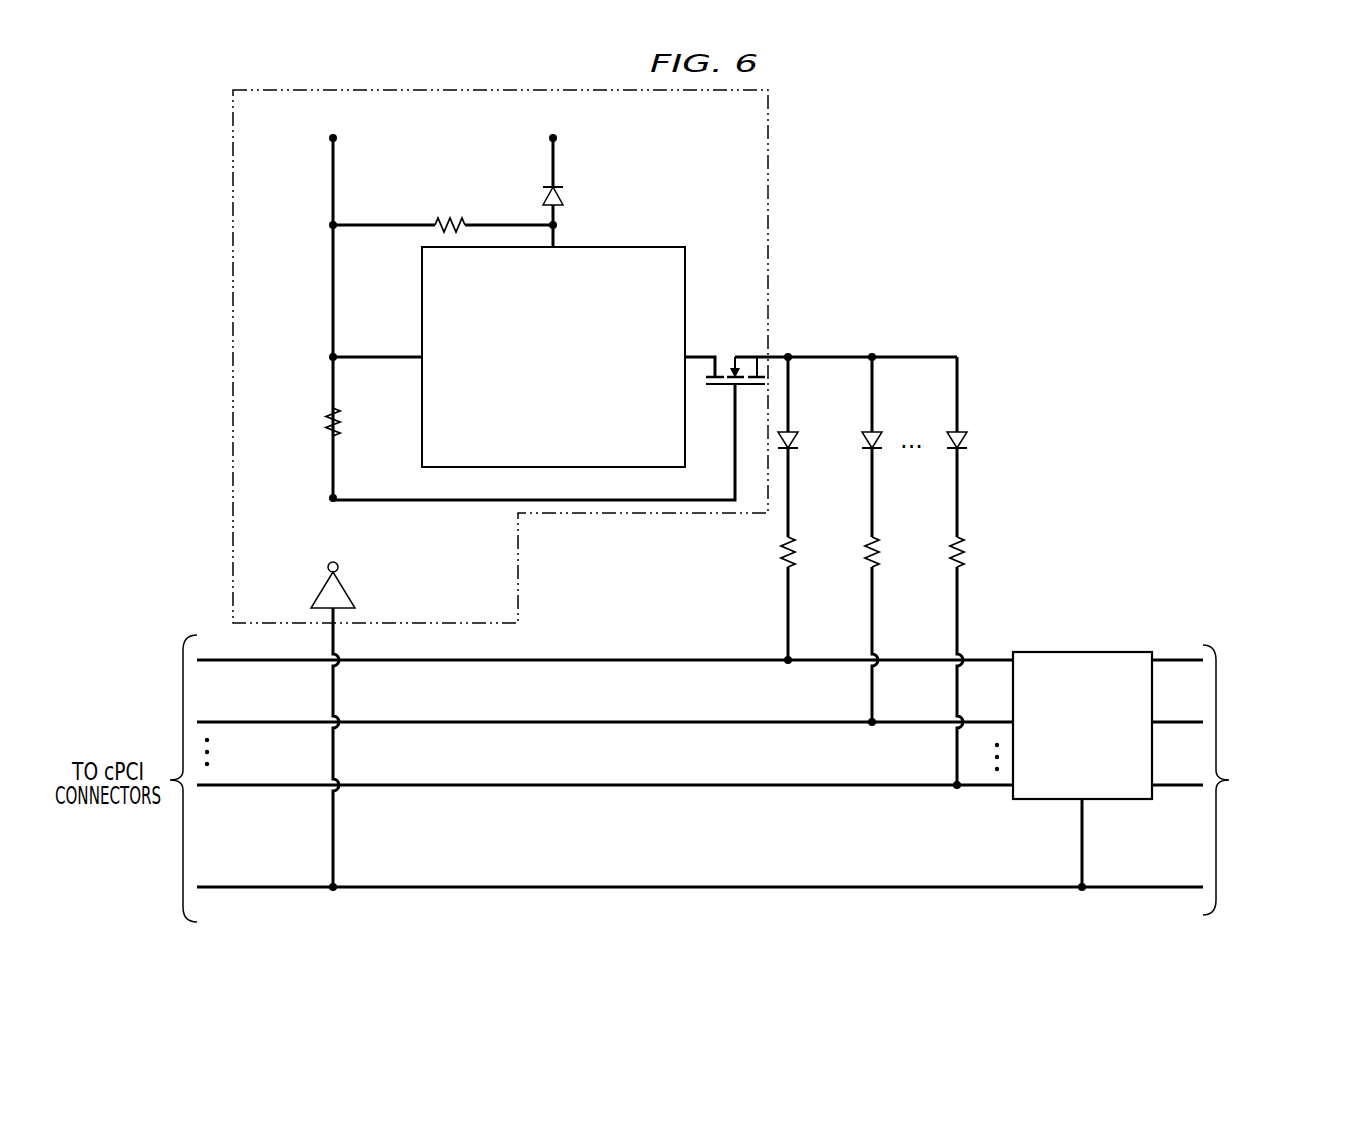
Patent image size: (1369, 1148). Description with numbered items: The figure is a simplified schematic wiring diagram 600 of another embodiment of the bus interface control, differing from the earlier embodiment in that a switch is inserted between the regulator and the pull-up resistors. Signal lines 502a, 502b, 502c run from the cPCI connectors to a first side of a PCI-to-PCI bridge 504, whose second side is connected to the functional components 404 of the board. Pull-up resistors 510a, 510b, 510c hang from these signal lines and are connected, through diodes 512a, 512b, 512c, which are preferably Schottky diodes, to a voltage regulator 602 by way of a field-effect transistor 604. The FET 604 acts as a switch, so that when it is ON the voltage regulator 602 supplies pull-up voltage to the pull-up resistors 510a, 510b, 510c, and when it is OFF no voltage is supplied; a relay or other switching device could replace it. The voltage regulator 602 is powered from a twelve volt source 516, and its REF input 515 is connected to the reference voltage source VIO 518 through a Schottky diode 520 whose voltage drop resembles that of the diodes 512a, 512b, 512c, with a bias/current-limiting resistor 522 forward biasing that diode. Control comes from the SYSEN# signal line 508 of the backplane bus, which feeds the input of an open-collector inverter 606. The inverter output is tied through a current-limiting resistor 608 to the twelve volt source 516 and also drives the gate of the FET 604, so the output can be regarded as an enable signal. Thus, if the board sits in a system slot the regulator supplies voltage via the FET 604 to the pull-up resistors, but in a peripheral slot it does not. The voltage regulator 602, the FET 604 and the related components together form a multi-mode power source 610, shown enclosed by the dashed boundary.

The simplified schematic wiring diagram 600 is at (1056, 218).
The multi-mode power source 610 is at (770, 141).
The +12 volt source 516 is at (333, 140).
The VIO 518 is at (556, 140).
The Schottky diode 520 is at (565, 195).
The bias/current-limiting resistor 522 is at (450, 218).
The REF input 515 is at (558, 246).
The voltage regulator 602 is at (687, 271).
The field-effect transistor (FET) 604 is at (714, 388).
The open-collector inverter 606 is at (350, 594).
The current-limiting resistor 608 is at (326, 425).
The diode 512a is at (795, 432).
The diode 512b is at (880, 432).
The diode 512c is at (965, 432).
The pull-up resistor 510a is at (781, 546).
The pull-up resistor 510b is at (878, 560).
The pull-up resistor 510c is at (964, 540).
The signal line 502a is at (232, 658).
The signal line 502b is at (243, 724).
The signal line 502c is at (243, 787).
The SYSEN# signal line 508 is at (243, 889).
The PCI-to-PCI bridge 504 is at (1113, 652).
The functional components 404 is at (1294, 825).